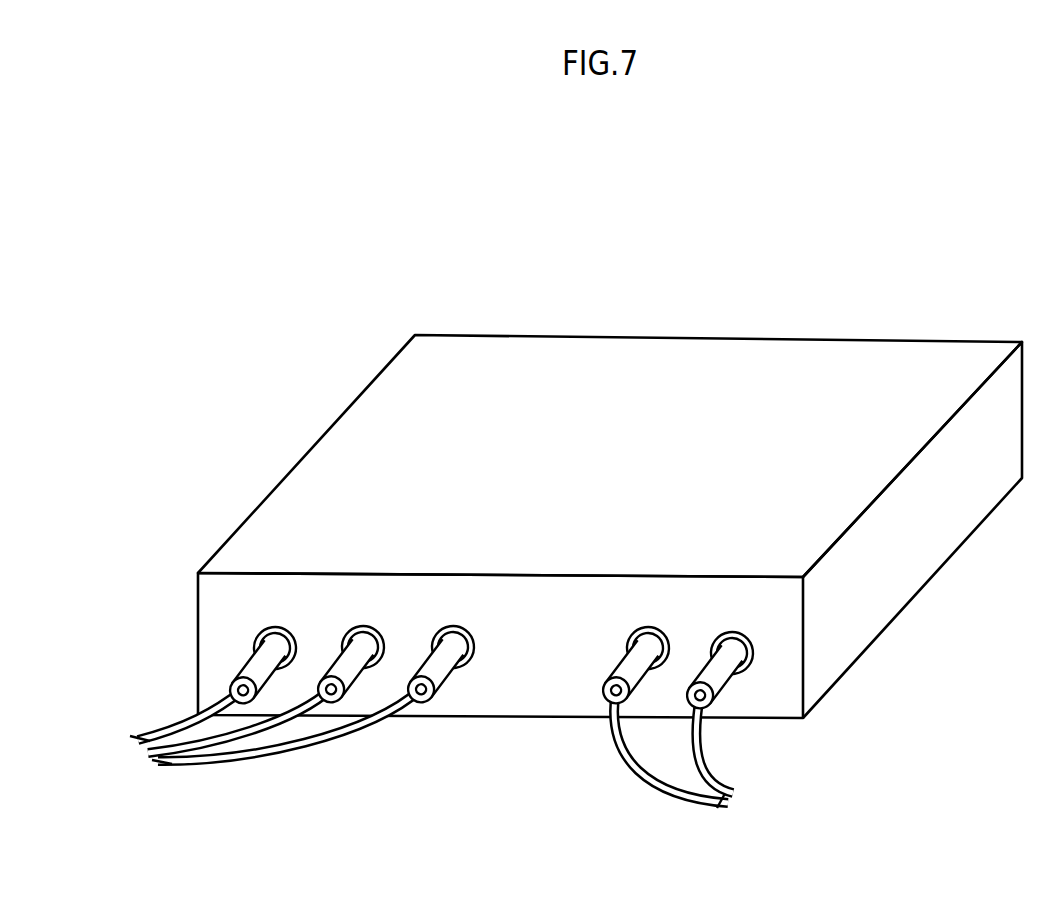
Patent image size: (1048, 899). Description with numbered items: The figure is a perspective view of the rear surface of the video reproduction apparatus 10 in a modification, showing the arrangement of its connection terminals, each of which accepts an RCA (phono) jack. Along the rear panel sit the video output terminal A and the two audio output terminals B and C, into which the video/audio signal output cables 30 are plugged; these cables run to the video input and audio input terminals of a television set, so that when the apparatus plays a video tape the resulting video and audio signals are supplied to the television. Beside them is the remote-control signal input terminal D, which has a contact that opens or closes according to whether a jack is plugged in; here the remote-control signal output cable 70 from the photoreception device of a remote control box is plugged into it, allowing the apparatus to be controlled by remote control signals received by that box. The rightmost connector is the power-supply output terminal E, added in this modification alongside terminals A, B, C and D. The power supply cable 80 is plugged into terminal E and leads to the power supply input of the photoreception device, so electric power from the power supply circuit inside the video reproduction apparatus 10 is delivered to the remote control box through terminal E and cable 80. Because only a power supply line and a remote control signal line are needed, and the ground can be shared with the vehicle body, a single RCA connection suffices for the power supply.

The video reproduction apparatus 10 is at (780, 337).
The video/audio signal output cables 30 is at (163, 730).
The remote-control signal output cable 70 is at (642, 782).
The power supply cable 80 is at (700, 757).
The video output terminal A is at (257, 633).
The audio output terminal B is at (347, 628).
The audio output terminal C is at (480, 652).
The remote-control signal input terminal D is at (608, 643).
The power-supply output terminal E is at (753, 652).